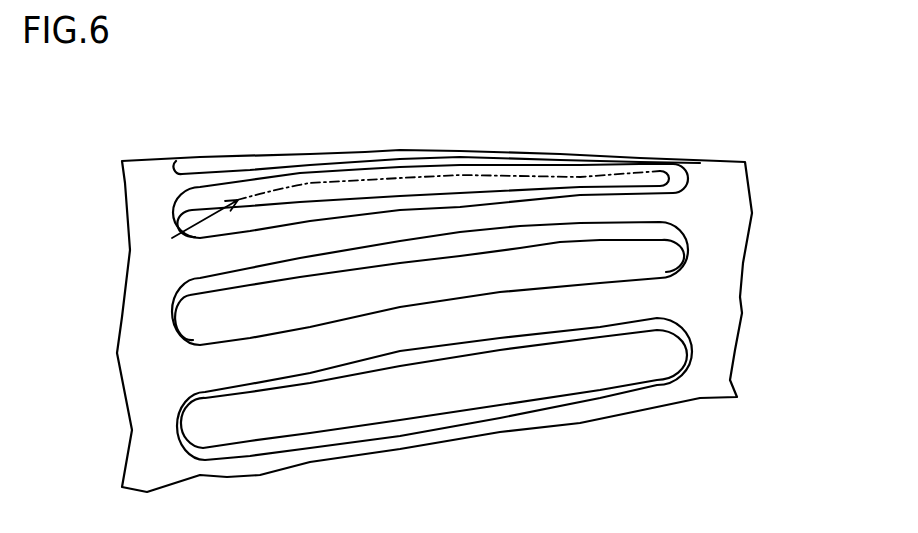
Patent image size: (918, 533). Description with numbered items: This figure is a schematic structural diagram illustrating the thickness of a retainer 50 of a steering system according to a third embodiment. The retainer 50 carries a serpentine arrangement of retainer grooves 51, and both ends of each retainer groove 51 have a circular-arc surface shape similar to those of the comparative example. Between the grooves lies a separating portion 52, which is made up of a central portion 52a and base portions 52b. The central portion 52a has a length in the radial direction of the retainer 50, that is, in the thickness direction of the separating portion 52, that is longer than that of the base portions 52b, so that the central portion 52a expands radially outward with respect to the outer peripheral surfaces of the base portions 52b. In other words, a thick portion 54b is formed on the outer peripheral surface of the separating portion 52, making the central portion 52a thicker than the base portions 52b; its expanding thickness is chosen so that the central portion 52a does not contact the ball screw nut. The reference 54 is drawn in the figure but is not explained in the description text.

The retainer 50 is at (227, 143).
The retainer groove 51 is at (189, 229).
The separating portion 52 is at (523, 312).
The central portion 52a is at (447, 221).
The base portion 52b is at (650, 206).
The flow path 54 is at (382, 90).
The thick portion 54b is at (441, 173).